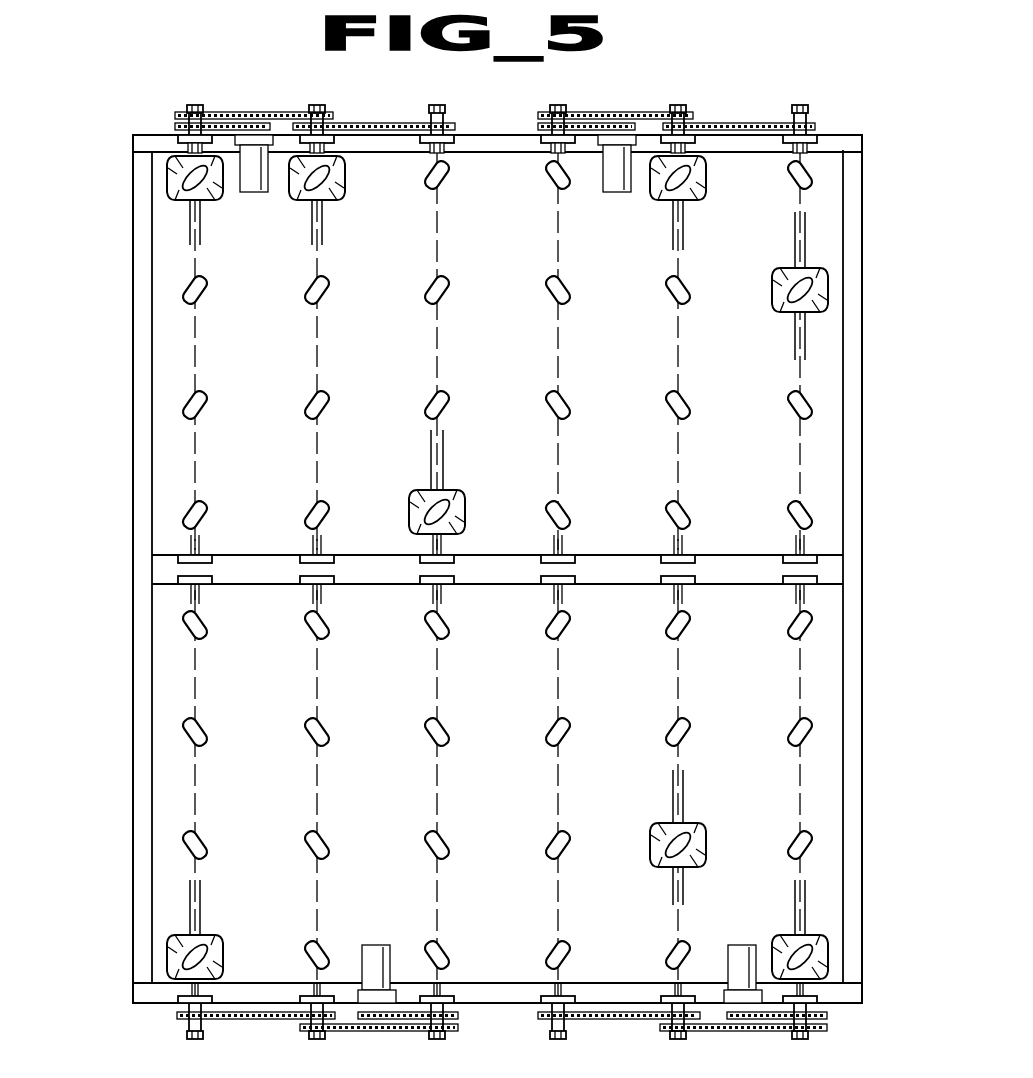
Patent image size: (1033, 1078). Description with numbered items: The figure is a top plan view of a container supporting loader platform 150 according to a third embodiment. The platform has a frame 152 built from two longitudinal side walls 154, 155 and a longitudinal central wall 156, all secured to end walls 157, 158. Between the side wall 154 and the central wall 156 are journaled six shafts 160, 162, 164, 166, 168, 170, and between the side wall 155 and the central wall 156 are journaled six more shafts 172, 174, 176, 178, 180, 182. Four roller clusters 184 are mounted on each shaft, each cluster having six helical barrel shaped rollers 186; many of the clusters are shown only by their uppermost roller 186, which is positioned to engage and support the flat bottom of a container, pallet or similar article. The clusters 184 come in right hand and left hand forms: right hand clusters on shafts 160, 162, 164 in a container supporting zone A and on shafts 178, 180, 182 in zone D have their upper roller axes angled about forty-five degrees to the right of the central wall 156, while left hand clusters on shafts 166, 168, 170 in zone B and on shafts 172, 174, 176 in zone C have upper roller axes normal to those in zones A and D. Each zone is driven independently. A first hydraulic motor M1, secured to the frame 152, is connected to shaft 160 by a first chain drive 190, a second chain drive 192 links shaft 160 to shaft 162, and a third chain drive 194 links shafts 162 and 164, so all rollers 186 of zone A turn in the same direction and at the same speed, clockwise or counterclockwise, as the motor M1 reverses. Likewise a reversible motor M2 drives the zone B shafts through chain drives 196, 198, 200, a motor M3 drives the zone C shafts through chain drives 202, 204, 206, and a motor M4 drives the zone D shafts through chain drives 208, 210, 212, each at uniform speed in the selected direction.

The platform 150 is at (668, 68).
The frame 152 is at (500, 571).
The side wall 154 is at (480, 135).
The side wall 155 is at (492, 1003).
The central wall 156 is at (490, 555).
The end wall 157 is at (142, 491).
The end wall 158 is at (862, 525).
The shaft 160 is at (190, 212).
The shaft 162 is at (325, 244).
The shaft 164 is at (432, 160).
The shaft 166 is at (550, 160).
The shaft 168 is at (690, 232).
The shaft 170 is at (800, 162).
The shaft 172 is at (205, 600).
The shaft 174 is at (325, 600).
The shaft 176 is at (445, 600).
The shaft 178 is at (568, 598).
The shaft 180 is at (690, 598).
The shaft 182 is at (805, 605).
The roller cluster 184 is at (166, 180).
The helical barrel shaped roller 186 is at (200, 287).
The first chain drive 190 is at (178, 127).
The second chain drive 192 is at (252, 112).
The third chain drive 194 is at (365, 124).
The chain drive 196 is at (590, 113).
The chain drive 198 is at (662, 112).
The chain drive 200 is at (782, 120).
The chain drive 202 is at (398, 1020).
The chain drive 204 is at (360, 1032).
The chain drive 206 is at (245, 1020).
The chain drive 208 is at (782, 1032).
The chain drive 210 is at (745, 1020).
The chain drive 212 is at (625, 1020).
The first hydraulic motor M1 is at (270, 192).
The second hydraulic motor M2 is at (605, 192).
The hydraulic motor M3 is at (378, 945).
The hydraulic motor M4 is at (740, 945).
The container supporting zone A is at (372, 371).
The zone B is at (625, 371).
The zone C is at (385, 801).
The zone D is at (630, 806).